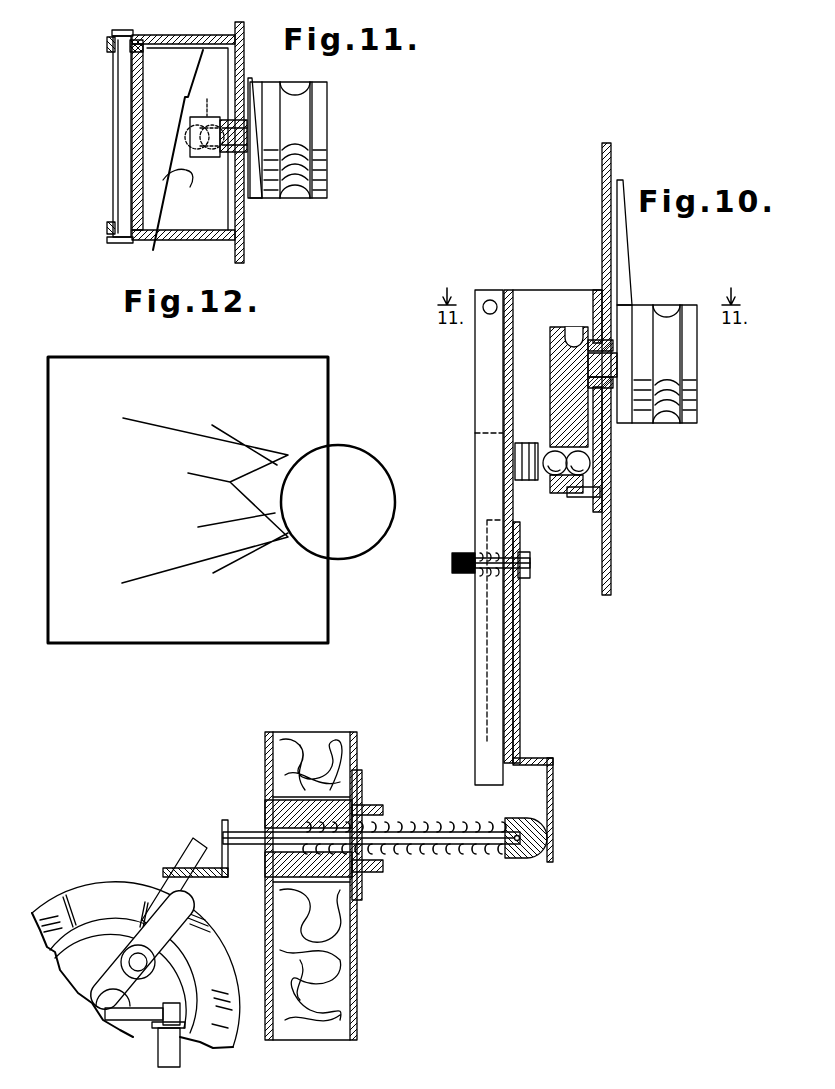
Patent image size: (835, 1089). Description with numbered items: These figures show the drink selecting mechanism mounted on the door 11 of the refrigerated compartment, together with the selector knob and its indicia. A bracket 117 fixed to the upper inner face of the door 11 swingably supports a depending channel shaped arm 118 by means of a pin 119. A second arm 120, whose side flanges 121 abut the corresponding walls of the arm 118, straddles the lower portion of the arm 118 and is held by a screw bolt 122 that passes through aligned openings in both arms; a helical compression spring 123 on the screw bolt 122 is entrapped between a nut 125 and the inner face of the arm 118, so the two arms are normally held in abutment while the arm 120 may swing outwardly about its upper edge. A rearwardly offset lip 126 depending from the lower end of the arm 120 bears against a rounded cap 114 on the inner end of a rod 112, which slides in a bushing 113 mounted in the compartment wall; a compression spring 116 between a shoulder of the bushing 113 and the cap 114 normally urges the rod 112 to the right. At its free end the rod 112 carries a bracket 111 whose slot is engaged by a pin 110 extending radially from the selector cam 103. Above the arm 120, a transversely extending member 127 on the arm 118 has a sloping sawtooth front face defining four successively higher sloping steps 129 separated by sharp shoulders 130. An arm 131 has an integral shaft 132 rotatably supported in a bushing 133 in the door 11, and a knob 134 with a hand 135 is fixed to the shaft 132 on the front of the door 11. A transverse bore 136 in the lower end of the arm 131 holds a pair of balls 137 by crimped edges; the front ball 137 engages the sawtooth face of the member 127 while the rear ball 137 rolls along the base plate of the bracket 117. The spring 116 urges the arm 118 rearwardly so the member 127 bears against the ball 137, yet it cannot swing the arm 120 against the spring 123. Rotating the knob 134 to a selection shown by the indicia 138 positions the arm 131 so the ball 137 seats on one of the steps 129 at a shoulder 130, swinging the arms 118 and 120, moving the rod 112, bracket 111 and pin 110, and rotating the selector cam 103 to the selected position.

In FIG. 11, the door 11 is at (247, 36).
In FIG. 10, the door 11 is at (611, 520).
In FIG. 10, the selector cam 103 is at (115, 895).
In FIG. 10, the pin 110 is at (193, 842).
In FIG. 10, the bracket 111 is at (210, 877).
In FIG. 10, the rod 112 is at (248, 830).
In FIG. 10, the bushing 113 is at (357, 790).
In FIG. 10, the rounded cap 114 is at (528, 860).
In FIG. 10, the compression spring 116 is at (425, 822).
In FIG. 11, the bracket 117 is at (185, 20).
In FIG. 10, the bracket 117 is at (537, 290).
In FIG. 10, the channel shaped arm 118 is at (515, 492).
In FIG. 11, the pin 119 is at (113, 150).
In FIG. 10, the pin 119 is at (492, 300).
In FIG. 10, the second arm 120 is at (521, 618).
In FIG. 10, the side flanges 121 is at (493, 517).
In FIG. 10, the screw bolt 122 is at (510, 562).
In FIG. 10, the helical compression spring 123 is at (484, 548).
In FIG. 10, the nut 125 is at (454, 563).
In FIG. 10, the lip 126 is at (556, 792).
In FIG. 11, the transversely extending member 127 is at (148, 80).
In FIG. 11, the sloping steps 129 is at (189, 187).
In FIG. 11, the sharp shoulders 130 is at (173, 159).
In FIG. 11, the arm 131 is at (200, 157).
In FIG. 10, the arm 131 is at (580, 455).
In FIG. 10, the shaft 132 is at (568, 338).
In FIG. 10, the bushing 133 is at (608, 345).
In FIG. 11, the knob 134 is at (333, 148).
In FIG. 10, the knob 134 is at (696, 378).
In FIG. 11, the hand 135 is at (256, 120).
In FIG. 10, the hand 135 is at (620, 180).
In FIG. 11, the transverse bore 136 is at (210, 112).
In FIG. 10, the transverse bore 136 is at (602, 487).
In FIG. 11, the balls 137 is at (186, 138).
In FIG. 10, the balls 137 is at (548, 458).
In FIG. 12, the indicia 138 is at (124, 383).